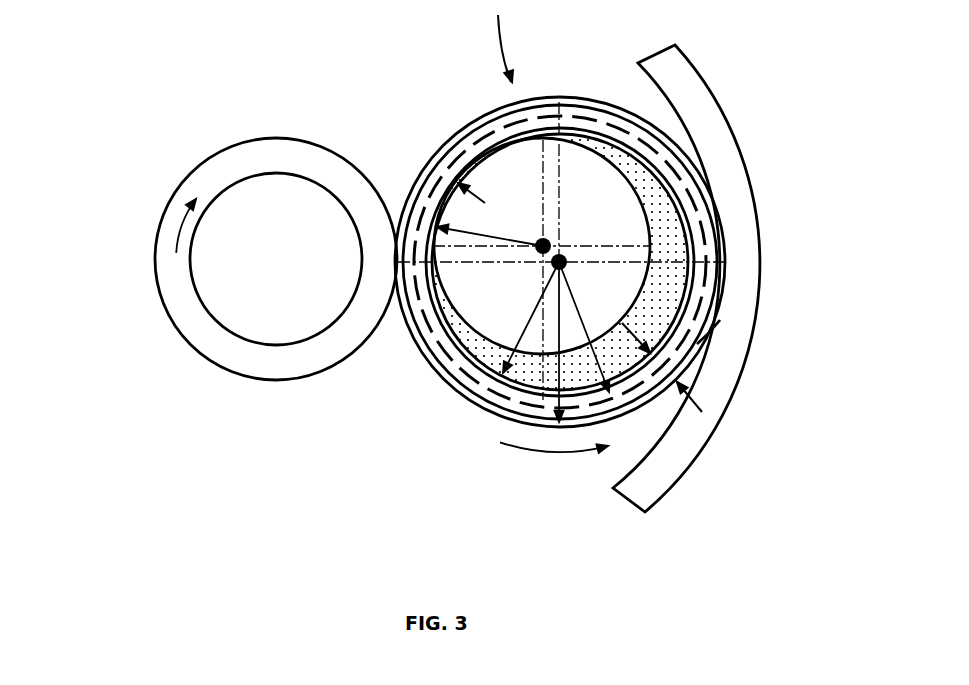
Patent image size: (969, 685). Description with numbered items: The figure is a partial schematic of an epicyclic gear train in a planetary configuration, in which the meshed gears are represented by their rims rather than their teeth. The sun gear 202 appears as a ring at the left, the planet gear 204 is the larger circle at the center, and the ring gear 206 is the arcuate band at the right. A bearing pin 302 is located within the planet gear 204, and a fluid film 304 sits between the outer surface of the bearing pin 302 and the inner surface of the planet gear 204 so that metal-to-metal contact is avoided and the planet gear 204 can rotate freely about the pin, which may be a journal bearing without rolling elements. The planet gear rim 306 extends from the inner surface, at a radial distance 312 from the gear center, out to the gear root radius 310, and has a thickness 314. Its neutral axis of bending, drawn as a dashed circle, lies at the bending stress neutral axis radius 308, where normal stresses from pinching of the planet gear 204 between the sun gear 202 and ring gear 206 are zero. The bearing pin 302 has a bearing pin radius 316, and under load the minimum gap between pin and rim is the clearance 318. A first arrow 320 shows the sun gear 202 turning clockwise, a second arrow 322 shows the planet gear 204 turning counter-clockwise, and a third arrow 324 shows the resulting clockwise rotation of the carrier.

The sun gear 202 is at (205, 158).
The planet gear 204 is at (508, 103).
The ring gear 206 is at (700, 75).
The bearing pin 302 is at (638, 200).
The fluid film 304 is at (695, 248).
The planet gear rim 306 is at (700, 342).
The bending stress neutral axis radius 308 is at (590, 338).
The gear root radius 310 is at (556, 310).
The inner surface radial distance 312 is at (519, 345).
The rim thickness 314 is at (682, 384).
The bearing pin radius 316 is at (442, 210).
The clearance 318 is at (455, 173).
The first arrow 320 is at (174, 216).
The second arrow 322 is at (554, 465).
The third arrow 324 is at (538, 48).